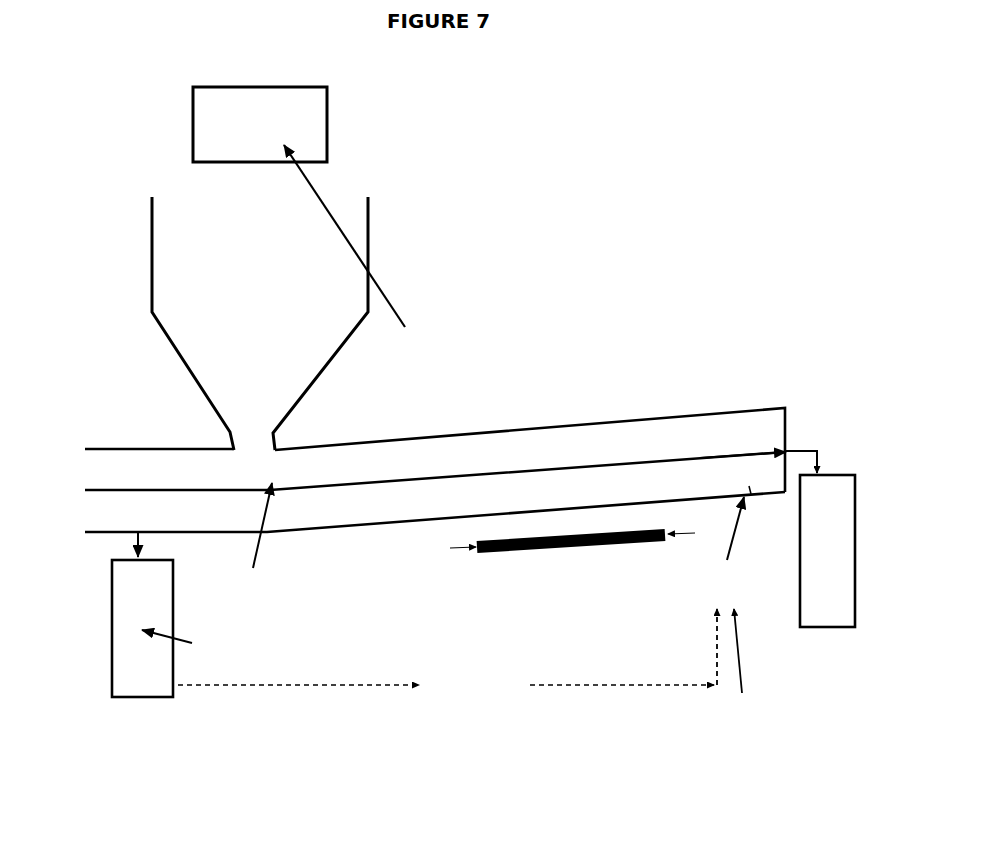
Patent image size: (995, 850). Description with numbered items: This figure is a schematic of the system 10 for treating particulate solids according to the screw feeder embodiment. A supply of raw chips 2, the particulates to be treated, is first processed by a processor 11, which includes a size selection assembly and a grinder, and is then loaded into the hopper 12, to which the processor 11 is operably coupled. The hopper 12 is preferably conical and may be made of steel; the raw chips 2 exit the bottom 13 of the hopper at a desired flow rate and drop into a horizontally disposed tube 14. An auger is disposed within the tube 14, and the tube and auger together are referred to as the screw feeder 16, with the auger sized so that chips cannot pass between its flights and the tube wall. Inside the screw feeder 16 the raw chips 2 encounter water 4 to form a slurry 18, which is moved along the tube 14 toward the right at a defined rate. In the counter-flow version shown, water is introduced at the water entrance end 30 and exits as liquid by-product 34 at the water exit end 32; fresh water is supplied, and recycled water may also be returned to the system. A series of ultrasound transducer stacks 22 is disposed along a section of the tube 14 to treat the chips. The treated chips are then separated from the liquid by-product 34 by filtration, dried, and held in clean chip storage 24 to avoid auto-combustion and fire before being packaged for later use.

The processor 11 is at (336, 122).
The hopper 12 is at (150, 276).
The raw chips 2 is at (288, 358).
The bottom of the hopper 13 is at (259, 433).
The tube 14 is at (373, 437).
The screw feeder 16 is at (452, 472).
The system 10 is at (533, 281).
The ultrasound transducers 22 is at (572, 553).
The water 4 is at (751, 494).
The water entrance end 30 is at (717, 549).
The water exit end 32 is at (129, 542).
The slurry 18 is at (243, 541).
The liquid by-product 34 is at (453, 669).
The clean chip storage 24 is at (839, 616).